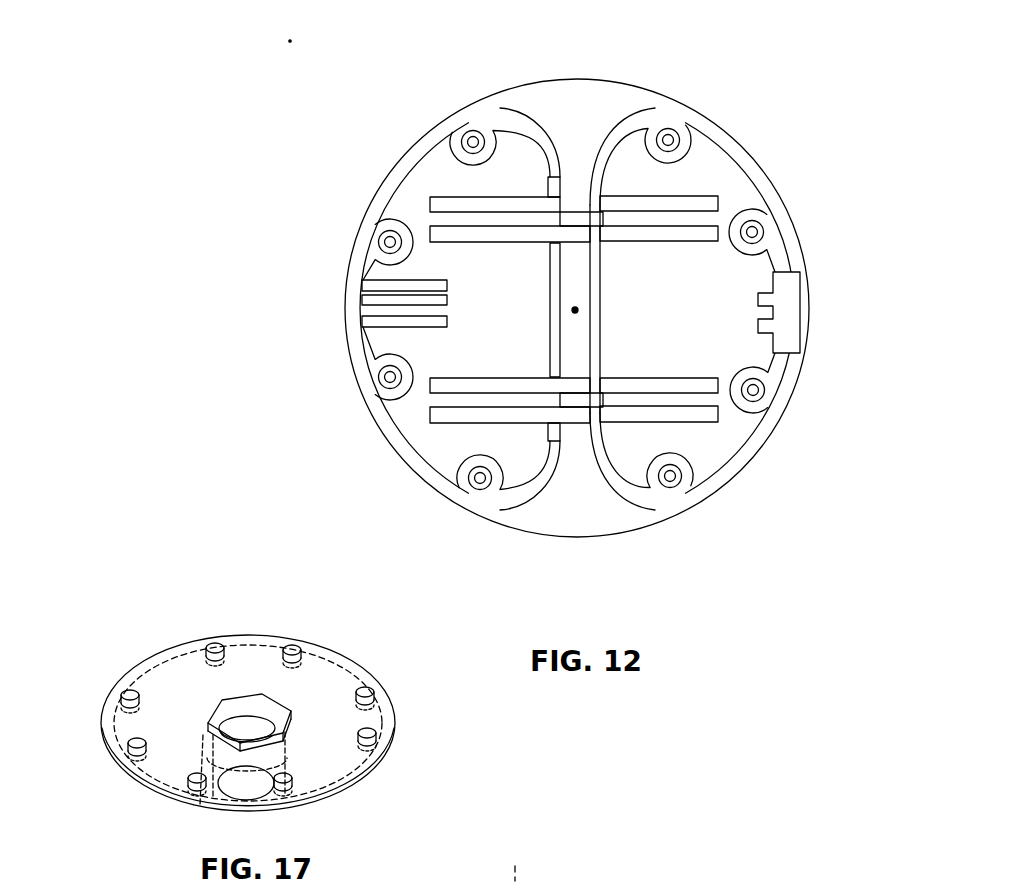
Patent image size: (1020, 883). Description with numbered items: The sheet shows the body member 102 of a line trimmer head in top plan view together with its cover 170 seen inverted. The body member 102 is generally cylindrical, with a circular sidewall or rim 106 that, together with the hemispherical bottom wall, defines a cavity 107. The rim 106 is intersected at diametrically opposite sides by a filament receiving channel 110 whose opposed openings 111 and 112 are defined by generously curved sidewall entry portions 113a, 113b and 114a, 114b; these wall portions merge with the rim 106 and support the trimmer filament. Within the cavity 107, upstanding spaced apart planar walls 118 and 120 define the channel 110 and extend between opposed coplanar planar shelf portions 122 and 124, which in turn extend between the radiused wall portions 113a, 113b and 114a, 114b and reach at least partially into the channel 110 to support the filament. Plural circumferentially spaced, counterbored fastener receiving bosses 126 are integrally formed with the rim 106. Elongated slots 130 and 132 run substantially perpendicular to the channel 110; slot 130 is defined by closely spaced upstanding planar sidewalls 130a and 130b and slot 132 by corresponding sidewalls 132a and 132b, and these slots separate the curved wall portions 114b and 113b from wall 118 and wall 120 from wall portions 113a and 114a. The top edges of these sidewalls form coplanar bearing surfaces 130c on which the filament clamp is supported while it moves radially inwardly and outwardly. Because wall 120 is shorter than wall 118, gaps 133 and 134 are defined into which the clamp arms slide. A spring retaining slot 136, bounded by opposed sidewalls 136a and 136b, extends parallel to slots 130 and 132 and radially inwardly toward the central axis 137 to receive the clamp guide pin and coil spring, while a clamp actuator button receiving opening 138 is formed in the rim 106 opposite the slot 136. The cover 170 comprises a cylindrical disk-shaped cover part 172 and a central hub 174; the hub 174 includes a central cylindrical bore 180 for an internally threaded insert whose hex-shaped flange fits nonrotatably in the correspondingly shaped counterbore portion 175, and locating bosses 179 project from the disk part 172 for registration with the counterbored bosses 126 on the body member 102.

In FIG. 12, the body member 102 is at (577, 294).
In FIG. 12, the rim 106 is at (592, 304).
In FIG. 12, the cavity 107 is at (501, 339).
In FIG. 12, the filament receiving channel 110 is at (626, 309).
In FIG. 12, the opening 111 is at (488, 79).
In FIG. 12, the opening 112 is at (536, 536).
In FIG. 12, the sidewall entry portion 113a is at (479, 122).
In FIG. 12, the sidewall entry portion 113b is at (653, 125).
In FIG. 12, the sidewall entry portion 114a is at (497, 503).
In FIG. 12, the sidewall entry portion 114b is at (663, 494).
In FIG. 12, the planar wall 118 is at (638, 309).
In FIG. 12, the planar wall 120 is at (514, 310).
In FIG. 12, the shelf portion 122 is at (506, 52).
In FIG. 12, the shelf portion 124 is at (505, 557).
In FIG. 12, the fastener receiving boss 126 is at (582, 313).
In FIG. 12, the slot 130 is at (453, 197).
In FIG. 12, the sidewall 130a is at (721, 173).
In FIG. 12, the sidewall 130b is at (728, 204).
In FIG. 12, the bearing surface 130c is at (571, 307).
In FIG. 12, the slot 132 is at (653, 394).
In FIG. 12, the sidewall 132a is at (659, 502).
In FIG. 12, the sidewall 132b is at (659, 366).
In FIG. 12, the gap 133 is at (521, 181).
In FIG. 12, the gap 134 is at (519, 437).
In FIG. 12, the spring retaining slot 136 is at (356, 302).
In FIG. 12, the sidewall 136a is at (348, 273).
In FIG. 12, the sidewall 136b is at (348, 341).
In FIG. 12, the central axis 137 is at (623, 296).
In FIG. 12, the clamp actuator button receiving opening 138 is at (825, 312).
In FIG. 17, the cover 170 is at (248, 692).
In FIG. 17, the cover part 172 is at (227, 715).
In FIG. 17, the hub 174 is at (212, 788).
In FIG. 17, the counterbore portion 175 is at (273, 712).
In FIG. 17, the locating boss 179 is at (245, 697).
In FIG. 17, the central cylindrical bore 180 is at (305, 784).